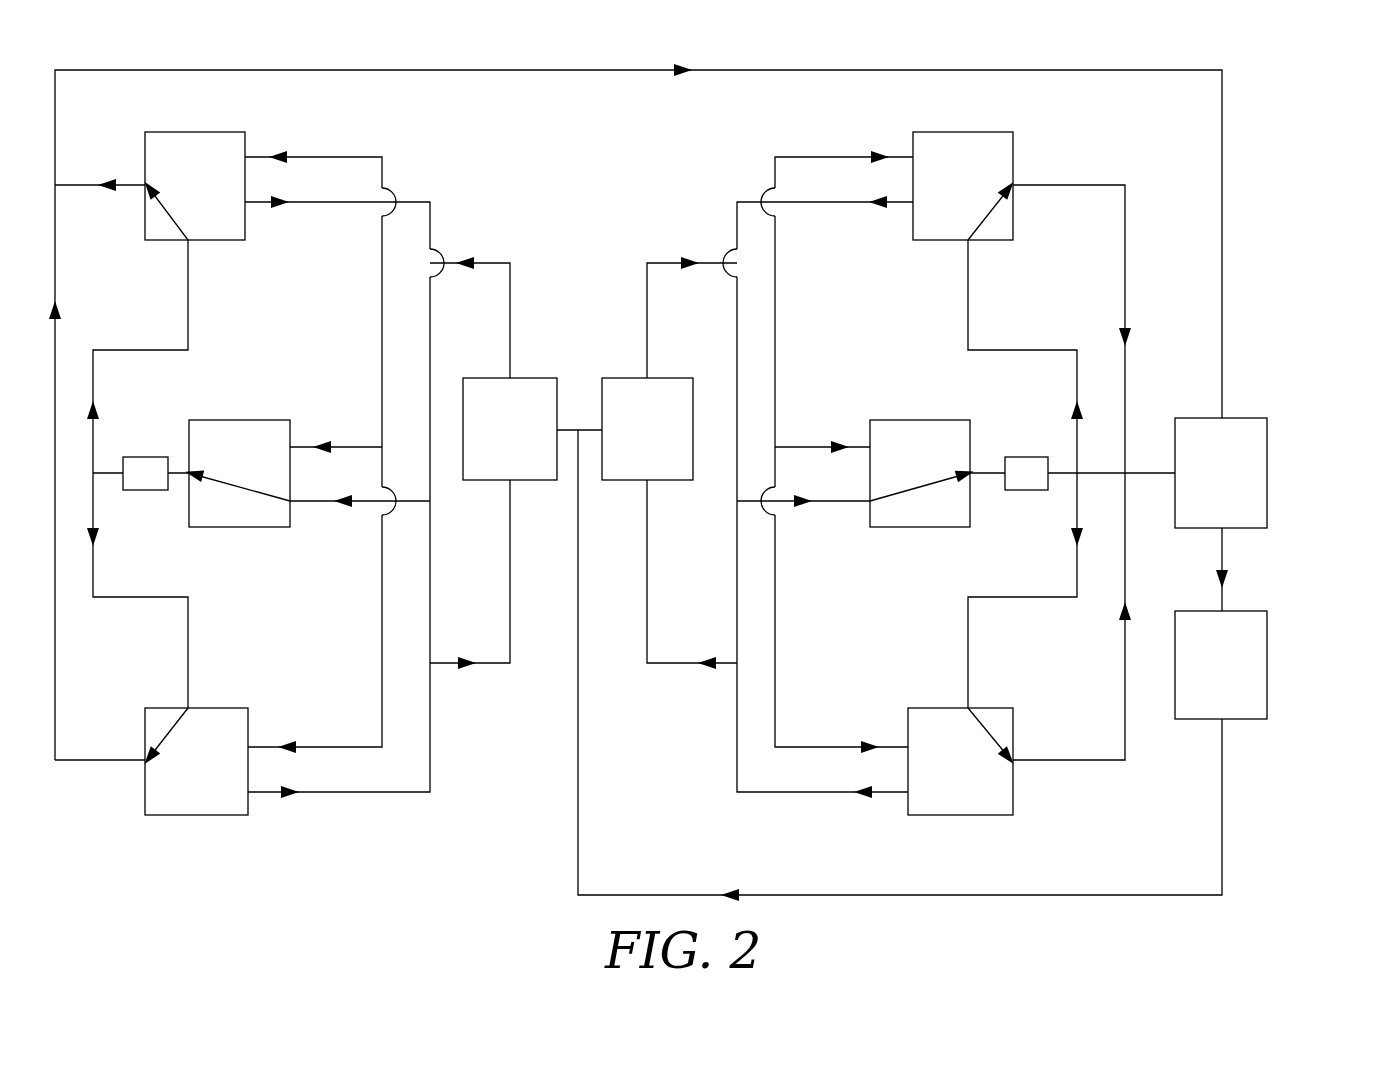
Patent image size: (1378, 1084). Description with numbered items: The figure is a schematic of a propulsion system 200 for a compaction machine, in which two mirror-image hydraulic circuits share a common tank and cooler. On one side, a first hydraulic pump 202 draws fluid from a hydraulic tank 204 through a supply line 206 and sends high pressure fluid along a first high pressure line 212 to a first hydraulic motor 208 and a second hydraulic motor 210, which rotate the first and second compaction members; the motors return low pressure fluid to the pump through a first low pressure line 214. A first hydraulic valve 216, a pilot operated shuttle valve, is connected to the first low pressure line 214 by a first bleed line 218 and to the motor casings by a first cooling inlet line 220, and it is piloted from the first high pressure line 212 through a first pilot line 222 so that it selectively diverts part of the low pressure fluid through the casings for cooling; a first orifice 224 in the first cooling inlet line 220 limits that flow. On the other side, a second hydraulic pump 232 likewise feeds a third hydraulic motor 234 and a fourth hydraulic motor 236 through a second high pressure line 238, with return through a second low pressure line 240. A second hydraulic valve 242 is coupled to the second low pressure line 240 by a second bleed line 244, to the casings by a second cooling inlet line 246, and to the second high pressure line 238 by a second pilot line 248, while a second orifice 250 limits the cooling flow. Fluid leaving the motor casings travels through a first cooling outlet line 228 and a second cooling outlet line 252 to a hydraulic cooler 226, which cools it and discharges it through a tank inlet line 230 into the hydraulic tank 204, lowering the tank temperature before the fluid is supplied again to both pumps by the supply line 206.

The propulsion system 200 is at (1262, 106).
The first hydraulic pump 202 is at (647, 429).
The hydraulic tank 204 is at (1221, 665).
The supply line 206 is at (645, 895).
The first hydraulic motor 208 is at (965, 186).
The second hydraulic motor 210 is at (963, 761).
The first high pressure line 212 is at (845, 157).
The first low pressure line 214 is at (850, 202).
The first hydraulic valve 216 is at (922, 473).
The first bleed line 218 is at (834, 501).
The first cooling inlet line 220 is at (1003, 350).
The first pilot line 222 is at (824, 447).
The first orifice 224 is at (1027, 490).
The hydraulic cooler 226 is at (1172, 473).
The first cooling outlet line 228 is at (1125, 233).
The tank inlet line 230 is at (1222, 555).
The second hydraulic pump 232 is at (532, 429).
The third hydraulic motor 234 is at (192, 186).
The fourth hydraulic motor 236 is at (194, 761).
The second high pressure line 238 is at (313, 157).
The second low pressure line 240 is at (307, 202).
The second hydraulic valve 242 is at (237, 473).
The second bleed line 244 is at (318, 501).
The second cooling inlet line 246 is at (155, 350).
The second pilot line 248 is at (336, 447).
The second orifice 250 is at (145, 490).
The second cooling outlet line 252 is at (87, 185).